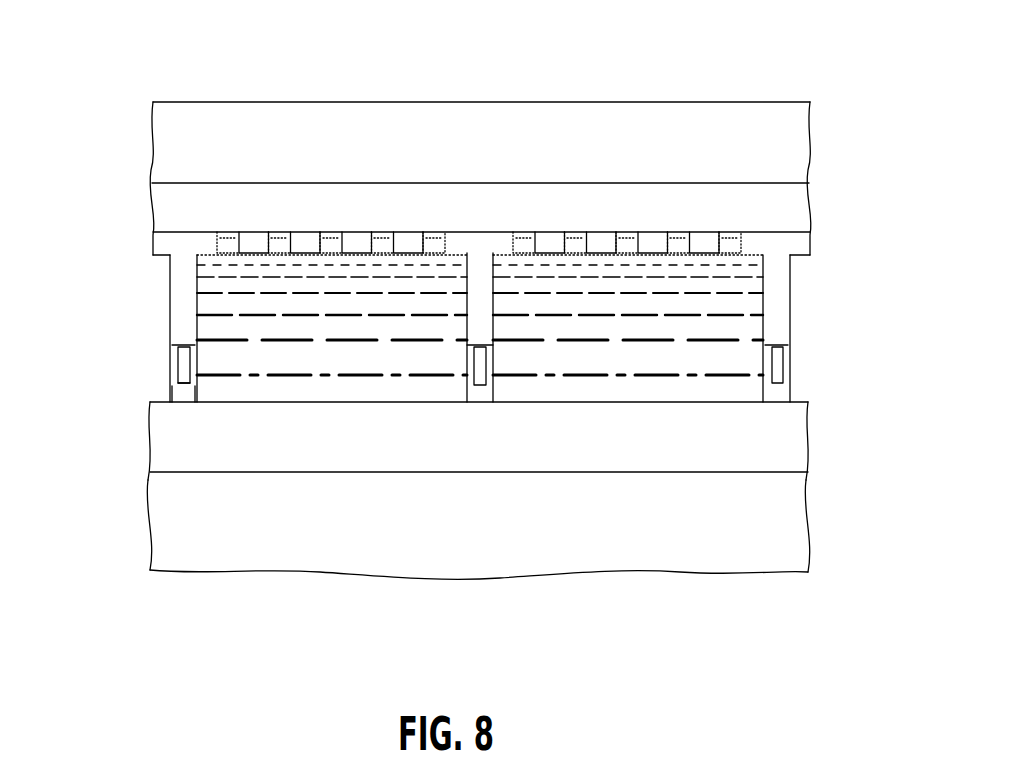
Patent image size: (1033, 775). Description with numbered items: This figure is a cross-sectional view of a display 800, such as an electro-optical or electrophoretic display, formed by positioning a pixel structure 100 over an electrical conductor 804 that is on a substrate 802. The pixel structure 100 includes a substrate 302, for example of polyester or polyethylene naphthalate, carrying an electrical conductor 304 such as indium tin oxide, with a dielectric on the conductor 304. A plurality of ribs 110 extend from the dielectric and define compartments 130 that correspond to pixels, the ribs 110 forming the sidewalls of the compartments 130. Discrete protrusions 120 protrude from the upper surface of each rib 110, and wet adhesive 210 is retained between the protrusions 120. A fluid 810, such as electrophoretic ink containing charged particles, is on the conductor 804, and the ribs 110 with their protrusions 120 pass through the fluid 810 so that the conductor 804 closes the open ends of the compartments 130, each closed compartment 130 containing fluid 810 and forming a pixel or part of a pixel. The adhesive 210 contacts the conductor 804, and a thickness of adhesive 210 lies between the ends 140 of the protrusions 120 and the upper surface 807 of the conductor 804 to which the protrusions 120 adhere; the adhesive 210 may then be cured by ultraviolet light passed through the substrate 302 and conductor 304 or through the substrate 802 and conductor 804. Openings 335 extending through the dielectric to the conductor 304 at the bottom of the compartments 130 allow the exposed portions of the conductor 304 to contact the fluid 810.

The pixel structure 100 is at (277, 117).
The display 800 is at (686, 58).
The substrate 302 is at (553, 146).
The electrical conductor 304 is at (553, 212).
The openings 335 is at (330, 243).
The ribs 110 is at (477, 267).
The fluid 810 is at (307, 314).
The surface of conductor 807 is at (291, 402).
The discrete protrusions 120 is at (182, 363).
The adhesive 210 is at (174, 392).
The ends of protrusions 140 is at (184, 384).
The compartments 130 is at (250, 388).
The electrical conductor 804 is at (653, 433).
The substrate 802 is at (653, 527).